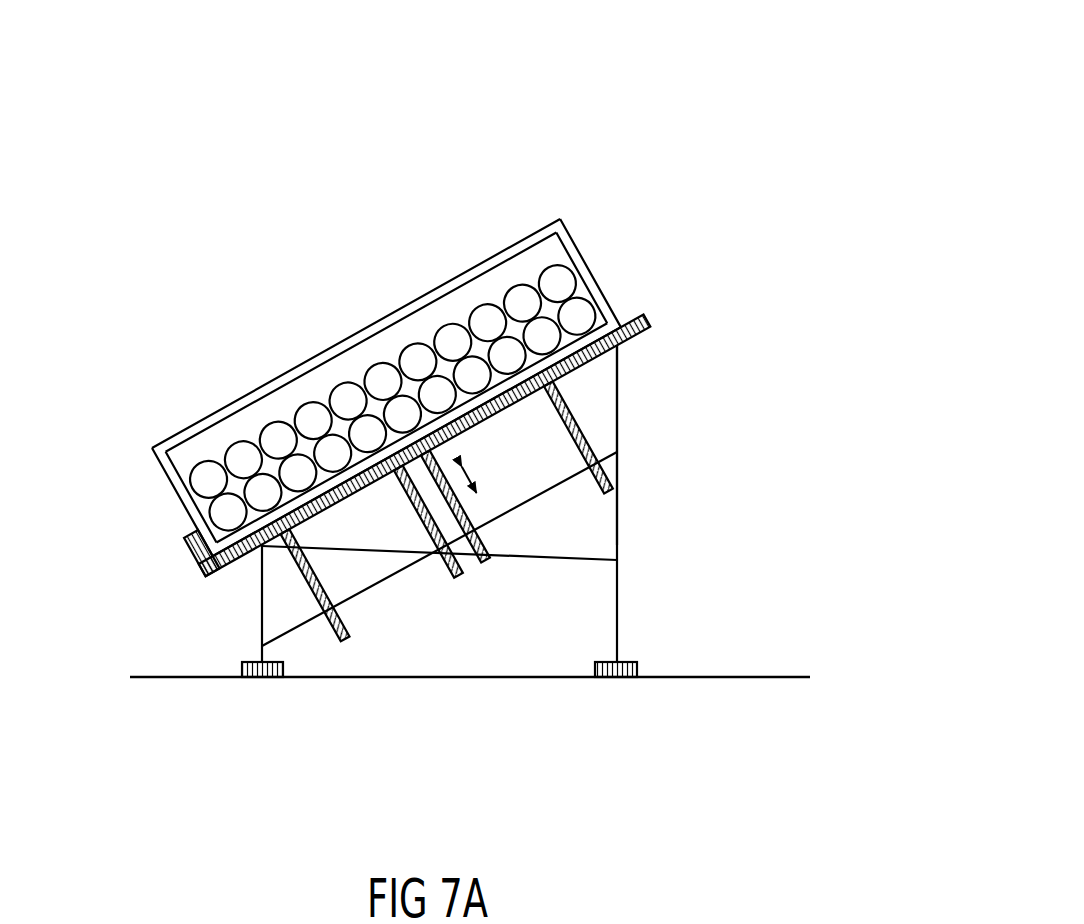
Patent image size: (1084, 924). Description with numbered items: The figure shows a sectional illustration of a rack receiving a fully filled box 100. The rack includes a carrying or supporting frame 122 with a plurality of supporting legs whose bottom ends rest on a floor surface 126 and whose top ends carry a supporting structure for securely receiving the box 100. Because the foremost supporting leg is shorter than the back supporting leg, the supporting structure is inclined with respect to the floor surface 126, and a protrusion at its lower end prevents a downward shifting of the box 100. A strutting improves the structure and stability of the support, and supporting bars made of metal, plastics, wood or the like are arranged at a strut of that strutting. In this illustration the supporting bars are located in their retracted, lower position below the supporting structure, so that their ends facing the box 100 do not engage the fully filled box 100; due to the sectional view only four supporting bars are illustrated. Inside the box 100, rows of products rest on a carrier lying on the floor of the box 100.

The box 100 is at (647, 70).
The supporting frame 122 is at (622, 418).
The floor surface 126 is at (688, 679).